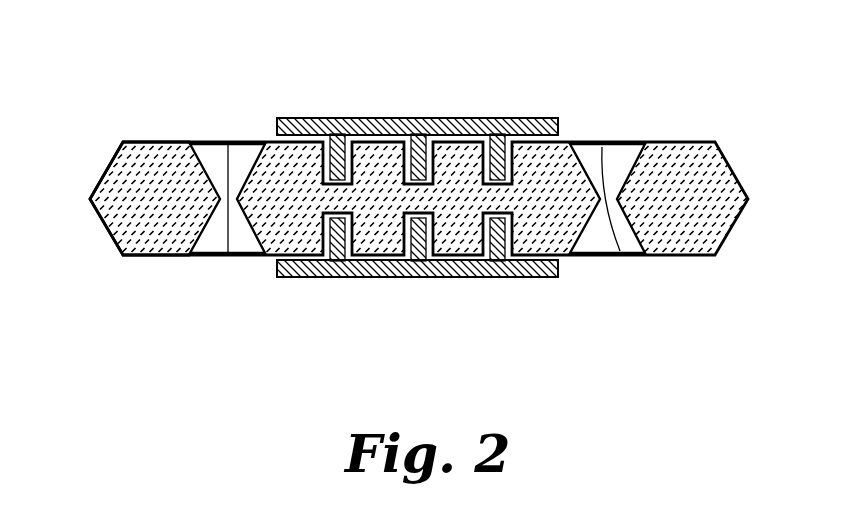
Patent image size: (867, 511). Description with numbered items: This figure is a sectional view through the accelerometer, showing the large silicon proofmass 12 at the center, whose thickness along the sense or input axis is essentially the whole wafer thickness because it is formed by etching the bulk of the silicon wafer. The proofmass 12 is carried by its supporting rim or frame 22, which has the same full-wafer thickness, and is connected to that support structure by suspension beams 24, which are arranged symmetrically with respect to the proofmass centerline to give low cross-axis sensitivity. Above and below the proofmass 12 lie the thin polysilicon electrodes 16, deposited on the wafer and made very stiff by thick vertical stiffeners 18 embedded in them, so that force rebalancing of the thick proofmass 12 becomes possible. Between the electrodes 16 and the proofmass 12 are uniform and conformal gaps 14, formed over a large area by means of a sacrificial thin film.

The proofmass 12 is at (555, 155).
The gaps 14 is at (390, 190).
The polysilicon electrodes 16 is at (286, 106).
The vertical stiffeners 18 is at (418, 150).
The supporting rim or frame 22 is at (158, 235).
The suspension beams 24 is at (228, 253).